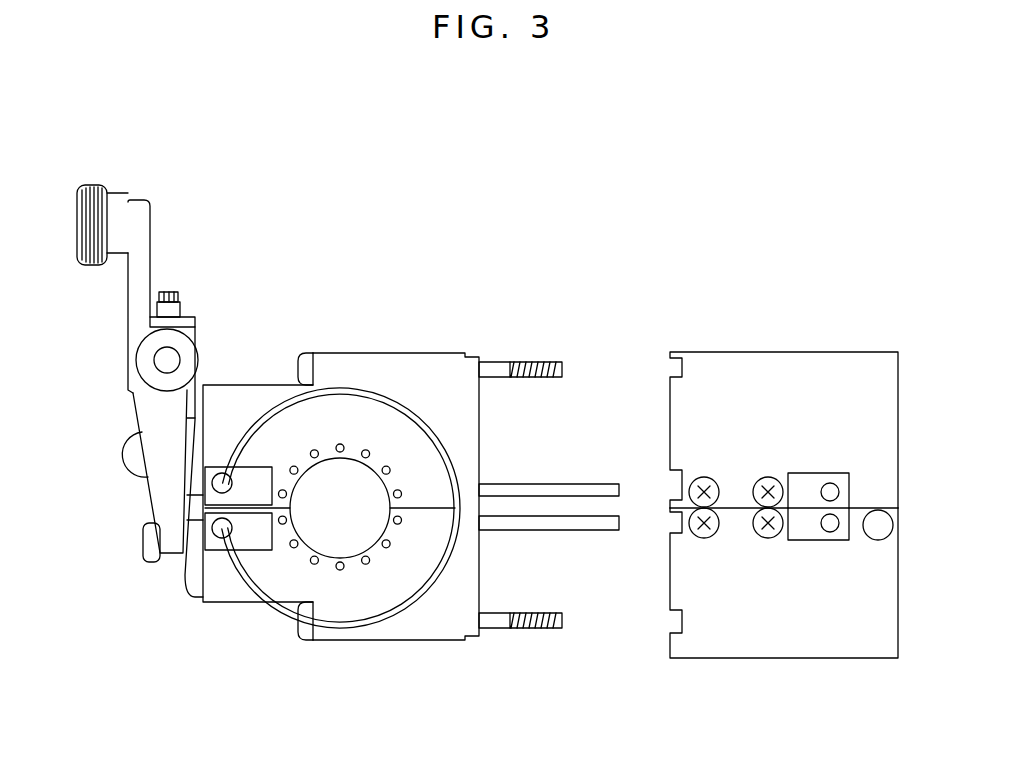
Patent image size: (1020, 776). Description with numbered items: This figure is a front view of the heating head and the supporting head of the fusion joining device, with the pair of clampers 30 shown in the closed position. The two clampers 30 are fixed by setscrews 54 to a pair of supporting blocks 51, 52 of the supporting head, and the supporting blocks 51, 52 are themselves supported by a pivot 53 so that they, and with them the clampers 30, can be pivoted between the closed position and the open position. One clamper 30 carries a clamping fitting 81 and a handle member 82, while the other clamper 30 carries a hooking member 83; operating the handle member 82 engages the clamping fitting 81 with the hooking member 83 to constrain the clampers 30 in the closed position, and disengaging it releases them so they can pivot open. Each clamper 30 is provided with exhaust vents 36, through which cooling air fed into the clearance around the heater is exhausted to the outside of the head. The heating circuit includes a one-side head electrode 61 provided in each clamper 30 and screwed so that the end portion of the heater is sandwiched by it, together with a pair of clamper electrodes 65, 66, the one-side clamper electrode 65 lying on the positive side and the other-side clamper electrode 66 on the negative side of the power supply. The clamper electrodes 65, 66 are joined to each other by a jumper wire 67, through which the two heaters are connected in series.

The clamper 30 is at (428, 365).
The exhaust vents 36 is at (366, 450).
The supporting block 51 is at (768, 380).
The supporting block 52 is at (767, 642).
The pivot 53 is at (880, 533).
The setscrews 54 is at (530, 360).
The one-side head electrode 61 is at (567, 483).
The one-side clamper electrode 65 is at (216, 470).
The other-side clamper electrode 66 is at (215, 550).
The jumper wire 67 is at (282, 612).
The clamping fitting 81 is at (150, 503).
The handle member 82 is at (132, 315).
The hooking member 83 is at (143, 547).